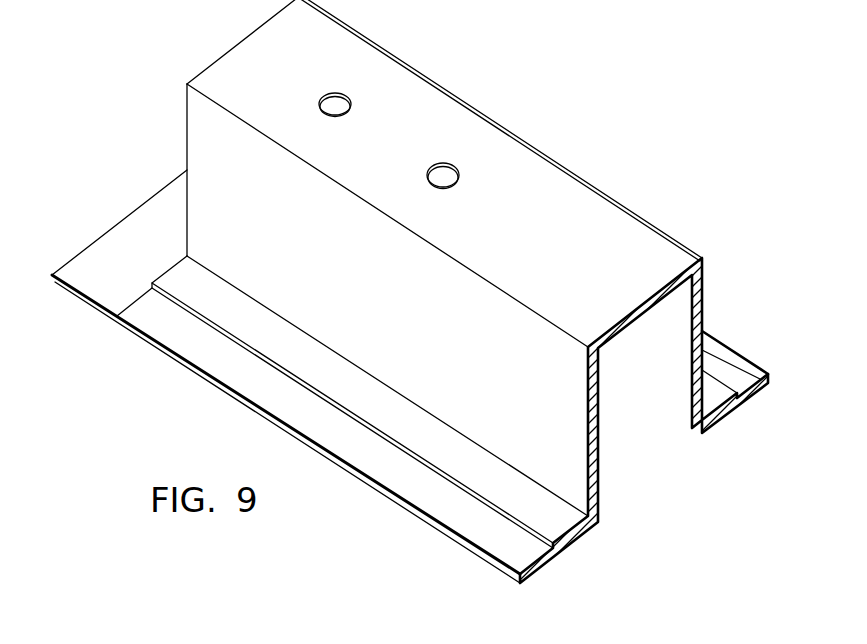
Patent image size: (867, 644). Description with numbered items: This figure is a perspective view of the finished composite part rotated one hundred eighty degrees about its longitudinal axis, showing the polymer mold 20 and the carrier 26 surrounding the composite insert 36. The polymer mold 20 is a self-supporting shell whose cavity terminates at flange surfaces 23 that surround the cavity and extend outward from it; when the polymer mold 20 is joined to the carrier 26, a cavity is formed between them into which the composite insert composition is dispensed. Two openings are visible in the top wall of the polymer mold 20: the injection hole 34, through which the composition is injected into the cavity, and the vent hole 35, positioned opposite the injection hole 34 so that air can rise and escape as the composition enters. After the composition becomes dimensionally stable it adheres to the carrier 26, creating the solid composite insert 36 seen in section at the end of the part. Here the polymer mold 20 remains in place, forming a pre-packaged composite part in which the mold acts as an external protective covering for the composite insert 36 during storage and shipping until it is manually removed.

The polymer mold 20 is at (627, 238).
The flange surfaces 23 is at (765, 385).
The carrier 26 is at (673, 403).
The injection hole 34 is at (451, 172).
The vent hole 35 is at (333, 100).
The composite insert 36 is at (697, 346).